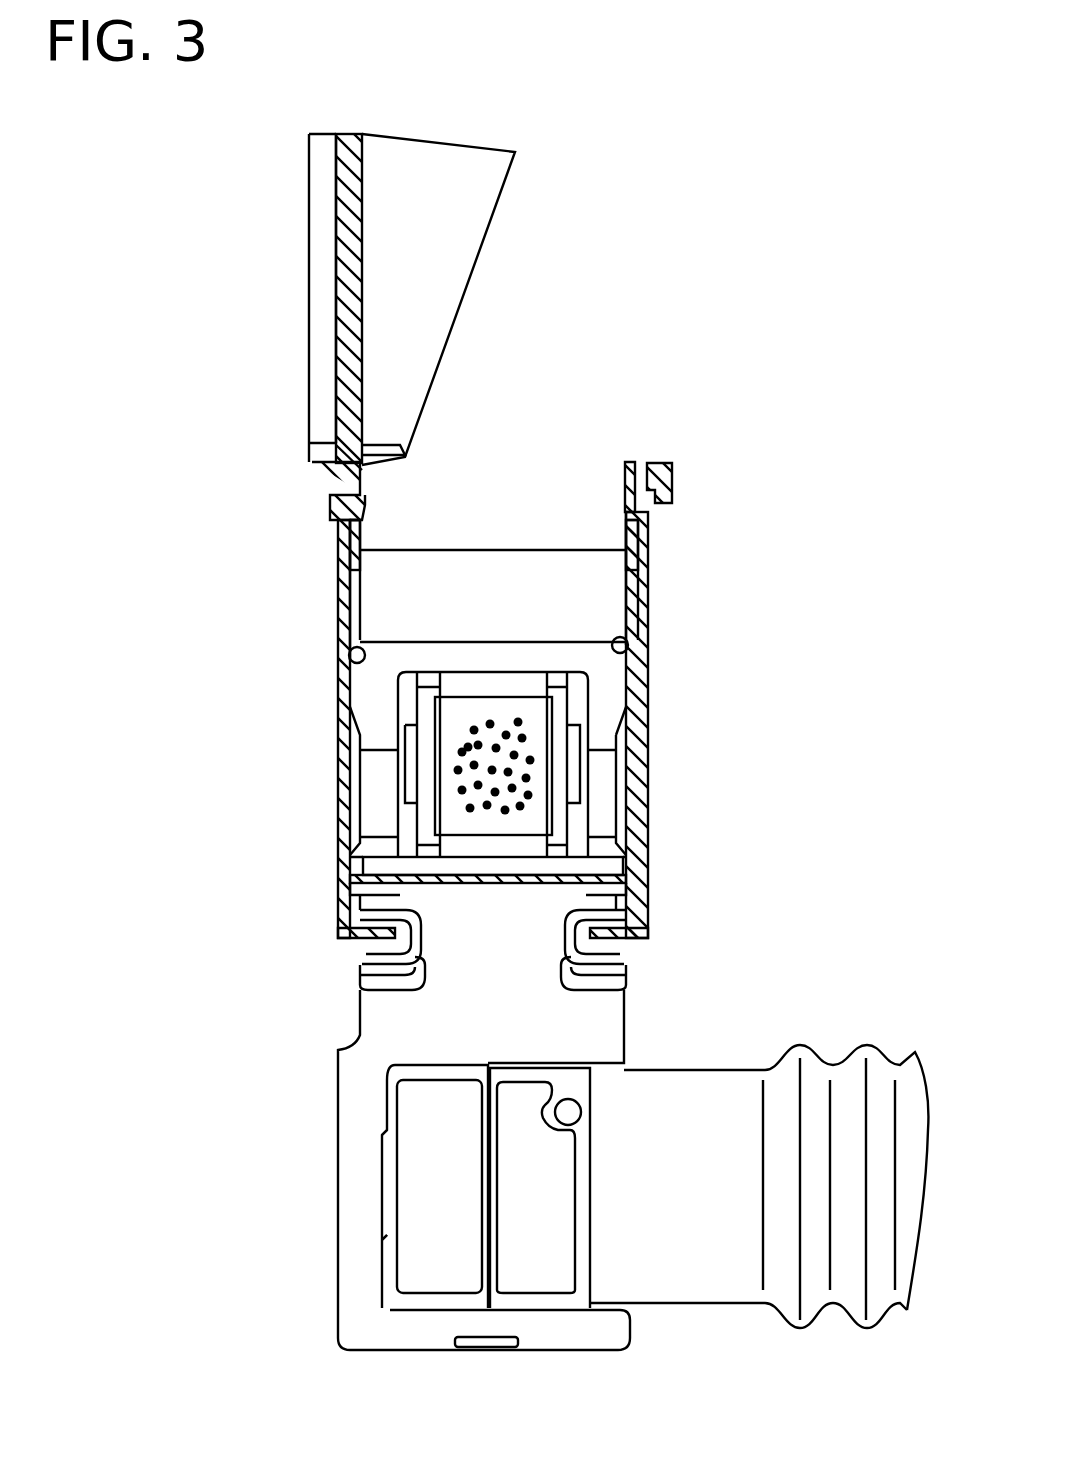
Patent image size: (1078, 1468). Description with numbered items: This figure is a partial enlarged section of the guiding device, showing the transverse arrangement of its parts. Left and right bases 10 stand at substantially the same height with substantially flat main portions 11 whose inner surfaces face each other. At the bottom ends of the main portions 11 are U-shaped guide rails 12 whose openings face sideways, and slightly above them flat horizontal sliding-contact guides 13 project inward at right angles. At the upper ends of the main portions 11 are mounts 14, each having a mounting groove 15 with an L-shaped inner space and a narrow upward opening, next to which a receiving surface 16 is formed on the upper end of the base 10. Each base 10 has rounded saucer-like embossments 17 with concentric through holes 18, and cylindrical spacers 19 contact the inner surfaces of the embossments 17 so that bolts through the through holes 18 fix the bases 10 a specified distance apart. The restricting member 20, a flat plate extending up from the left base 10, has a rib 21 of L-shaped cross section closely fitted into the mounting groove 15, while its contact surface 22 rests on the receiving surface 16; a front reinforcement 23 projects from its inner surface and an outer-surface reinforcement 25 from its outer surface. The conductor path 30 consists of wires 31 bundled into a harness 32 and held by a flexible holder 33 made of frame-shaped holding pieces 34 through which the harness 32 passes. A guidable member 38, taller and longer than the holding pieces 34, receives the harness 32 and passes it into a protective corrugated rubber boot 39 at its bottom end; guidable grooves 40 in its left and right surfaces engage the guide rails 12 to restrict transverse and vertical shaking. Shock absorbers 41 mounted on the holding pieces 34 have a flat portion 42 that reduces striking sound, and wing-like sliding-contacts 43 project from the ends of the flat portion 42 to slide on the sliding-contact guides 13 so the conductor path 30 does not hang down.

The base 10 is at (279, 606).
The main portion 11 is at (345, 743).
The guide rail 12 is at (360, 955).
The sliding-contact guide 13 is at (348, 887).
The mount 14 is at (318, 490).
The mounting groove 15 is at (338, 515).
The receiving surface 16 is at (318, 440).
The embossment 17 is at (350, 657).
The through hole 18 is at (356, 580).
The spacer 19 is at (537, 585).
The restricting member 20 is at (362, 183).
The rib 21 is at (362, 488).
The contact surface 22 is at (368, 472).
The front reinforcement 23 is at (425, 292).
The outer-surface reinforcement 25 is at (318, 226).
The conductor path 30 is at (560, 650).
The wire 31 is at (538, 765).
The harness 32 is at (544, 715).
The flexible holder 33 is at (495, 650).
The holding piece 34 is at (408, 707).
The guidable member 38 is at (603, 1031).
The corrugated rubber boot 39 is at (850, 1082).
The guidable groove 40 is at (610, 1003).
The shock absorber 41 is at (527, 860).
The flat portion 42 is at (645, 905).
The sliding-contact 43 is at (362, 862).